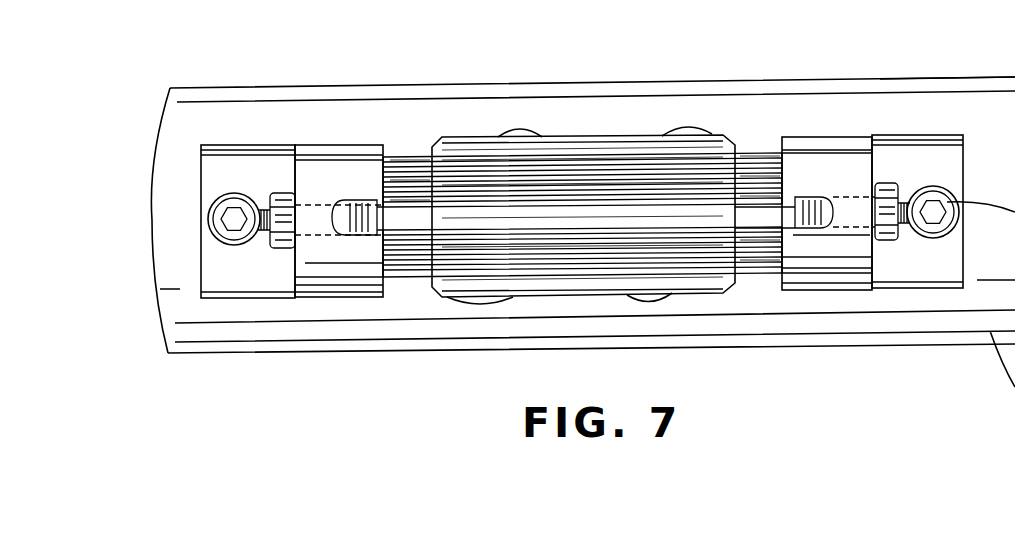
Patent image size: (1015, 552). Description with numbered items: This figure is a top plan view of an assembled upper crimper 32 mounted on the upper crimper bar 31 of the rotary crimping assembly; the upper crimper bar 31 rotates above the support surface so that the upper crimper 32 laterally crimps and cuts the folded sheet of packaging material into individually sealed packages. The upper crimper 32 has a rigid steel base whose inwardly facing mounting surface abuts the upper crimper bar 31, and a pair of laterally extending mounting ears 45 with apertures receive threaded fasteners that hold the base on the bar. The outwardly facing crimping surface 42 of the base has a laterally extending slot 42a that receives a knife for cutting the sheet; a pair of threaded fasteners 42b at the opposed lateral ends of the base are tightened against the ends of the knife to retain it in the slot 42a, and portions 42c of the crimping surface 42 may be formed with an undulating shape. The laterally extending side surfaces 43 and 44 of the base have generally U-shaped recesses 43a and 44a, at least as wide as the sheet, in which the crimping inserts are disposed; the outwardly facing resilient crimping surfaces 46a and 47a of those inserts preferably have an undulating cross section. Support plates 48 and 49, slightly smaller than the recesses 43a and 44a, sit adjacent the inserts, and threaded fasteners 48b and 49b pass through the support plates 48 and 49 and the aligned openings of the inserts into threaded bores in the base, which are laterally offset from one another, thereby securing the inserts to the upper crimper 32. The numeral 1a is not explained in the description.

The hexagon socket bolt 1a is at (240, 218).
The upper crimper bar 31 is at (947, 39).
The upper crimper 32 is at (337, 104).
The outwardly facing crimping surface 42 is at (830, 153).
The laterally extending slot 42a is at (750, 212).
The threaded fasteners 42b is at (262, 245).
The portions of outwardly facing surface 42c is at (428, 190).
The laterally extending side surface 43 is at (332, 298).
The recess 43a is at (582, 233).
The laterally extending side surface 44 is at (400, 250).
The recess 44a is at (582, 195).
The mounting ears 45 is at (227, 157).
The crimping surface 46a is at (610, 250).
The crimping surface 47a is at (640, 180).
The support plate 48 is at (490, 275).
The threaded fasteners 48b is at (482, 300).
The support plate 49 is at (560, 152).
The threaded fasteners 49b is at (520, 130).